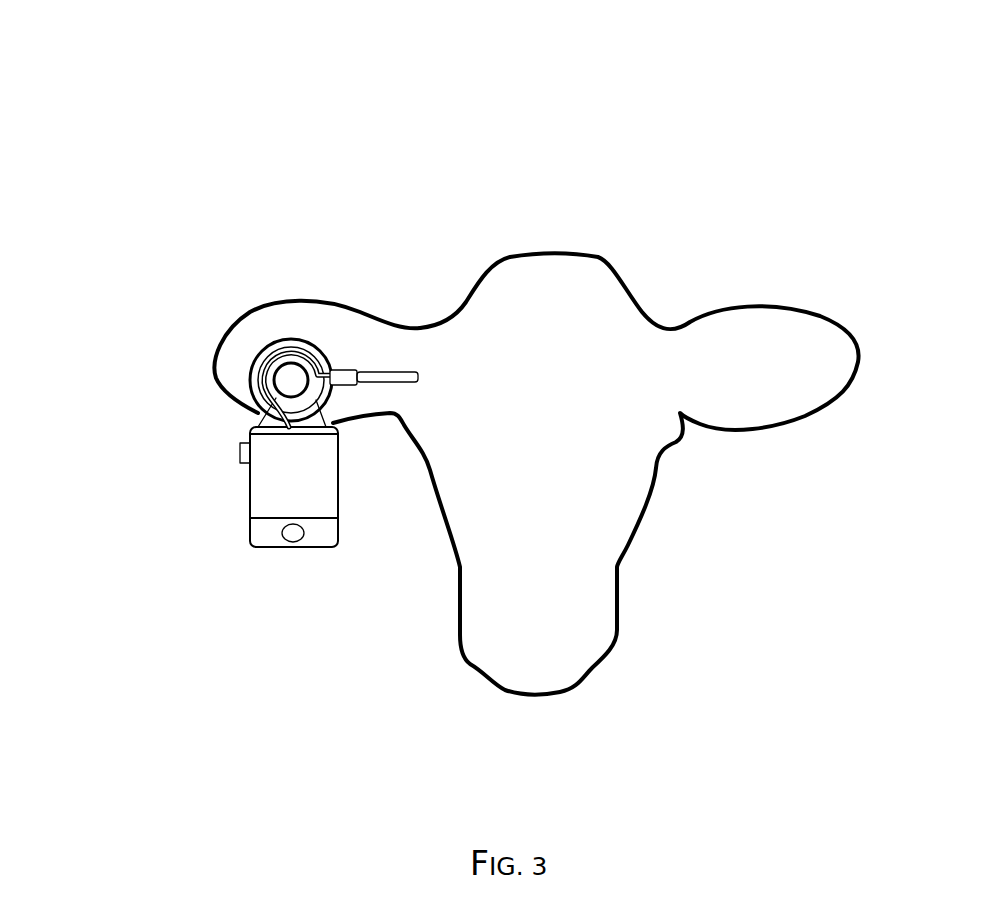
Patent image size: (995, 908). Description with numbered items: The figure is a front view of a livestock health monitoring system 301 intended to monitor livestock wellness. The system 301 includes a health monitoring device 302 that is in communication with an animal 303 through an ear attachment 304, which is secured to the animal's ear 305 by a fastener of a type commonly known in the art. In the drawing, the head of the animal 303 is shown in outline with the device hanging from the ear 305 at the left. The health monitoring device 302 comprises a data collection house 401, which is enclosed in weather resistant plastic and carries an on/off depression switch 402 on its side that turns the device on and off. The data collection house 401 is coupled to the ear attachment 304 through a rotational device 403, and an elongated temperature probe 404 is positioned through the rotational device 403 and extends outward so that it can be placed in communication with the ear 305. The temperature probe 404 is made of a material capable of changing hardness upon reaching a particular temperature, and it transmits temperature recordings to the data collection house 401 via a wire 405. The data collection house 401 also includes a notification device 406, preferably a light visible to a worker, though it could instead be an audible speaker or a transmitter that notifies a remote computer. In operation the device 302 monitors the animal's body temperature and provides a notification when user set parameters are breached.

The livestock health monitoring system 301 is at (127, 64).
The health monitoring device 302 is at (191, 526).
The animal 303 is at (715, 254).
The ear attachment 304 is at (287, 337).
The animal's ear 305 is at (313, 300).
The data collection house 401 is at (340, 483).
The on/off depression switch 402 is at (240, 463).
The rotational device 403 is at (352, 370).
The temperature probe 404 is at (400, 388).
The wire 405 is at (262, 424).
The notification device 406 is at (300, 542).